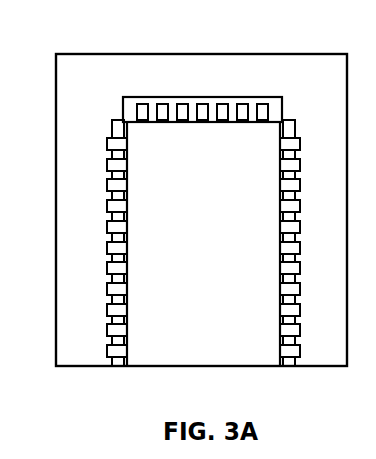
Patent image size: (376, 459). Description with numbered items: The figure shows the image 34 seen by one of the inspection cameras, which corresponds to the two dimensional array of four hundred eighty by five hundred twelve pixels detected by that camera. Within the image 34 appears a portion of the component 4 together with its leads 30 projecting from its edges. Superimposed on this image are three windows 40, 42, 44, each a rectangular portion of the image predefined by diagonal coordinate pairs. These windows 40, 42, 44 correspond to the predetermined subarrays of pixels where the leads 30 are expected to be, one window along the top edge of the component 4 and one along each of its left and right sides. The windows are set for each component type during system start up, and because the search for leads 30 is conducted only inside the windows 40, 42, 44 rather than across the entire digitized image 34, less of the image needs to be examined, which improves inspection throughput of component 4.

The component 4 is at (207, 231).
The leads 30 is at (188, 72).
The image 34 is at (72, 266).
The window 40 is at (114, 131).
The window 42 is at (282, 87).
The window 44 is at (289, 130).